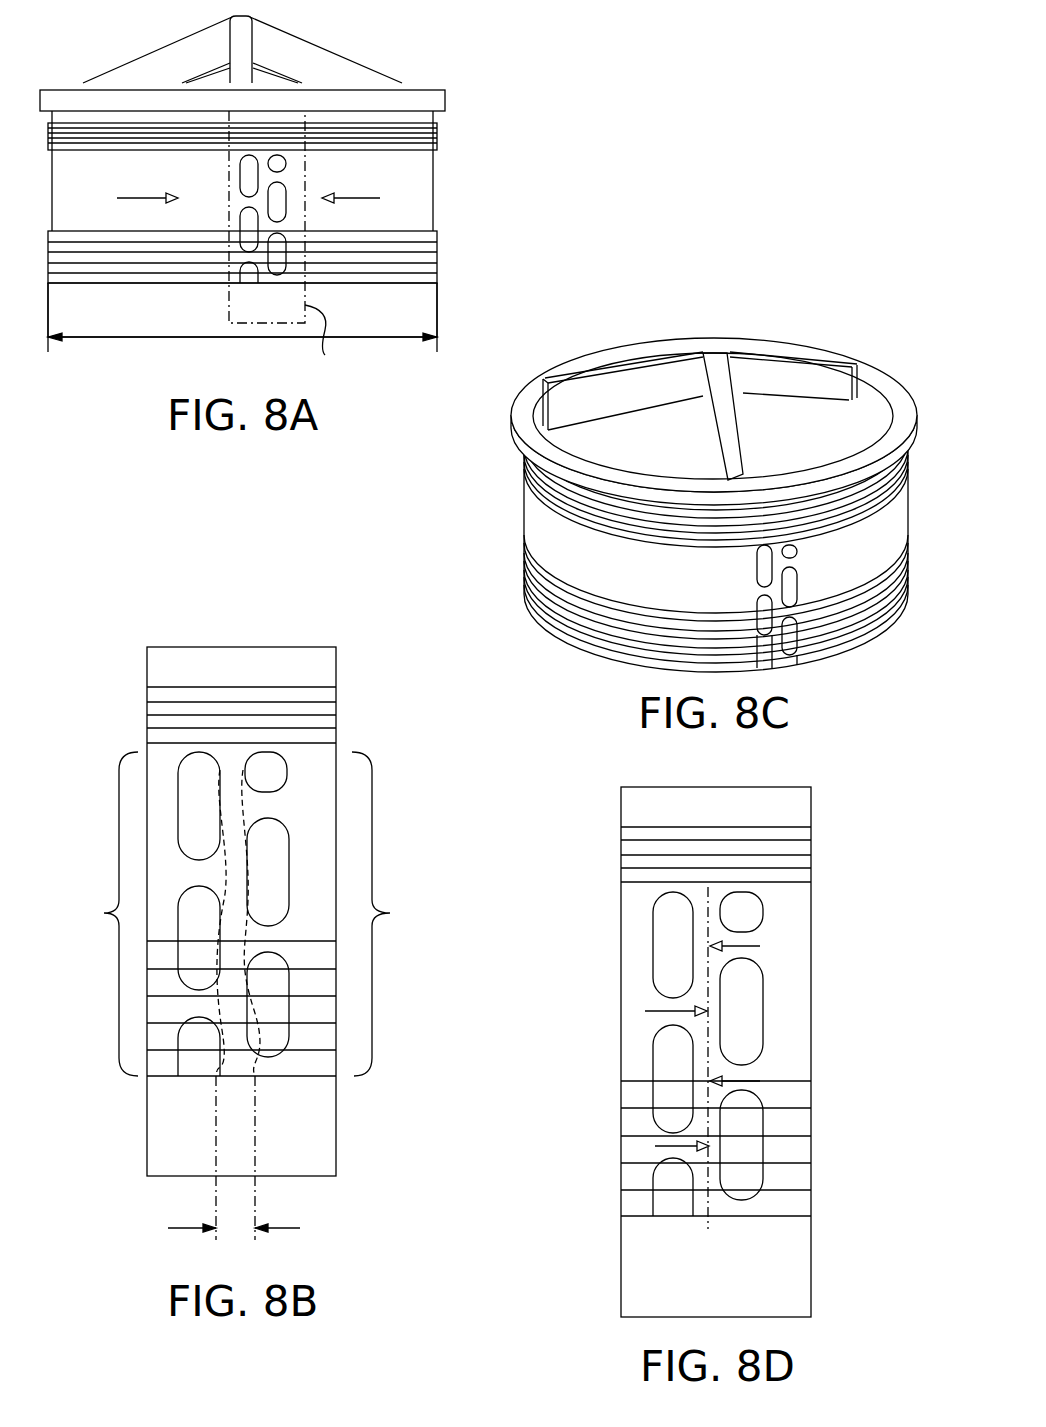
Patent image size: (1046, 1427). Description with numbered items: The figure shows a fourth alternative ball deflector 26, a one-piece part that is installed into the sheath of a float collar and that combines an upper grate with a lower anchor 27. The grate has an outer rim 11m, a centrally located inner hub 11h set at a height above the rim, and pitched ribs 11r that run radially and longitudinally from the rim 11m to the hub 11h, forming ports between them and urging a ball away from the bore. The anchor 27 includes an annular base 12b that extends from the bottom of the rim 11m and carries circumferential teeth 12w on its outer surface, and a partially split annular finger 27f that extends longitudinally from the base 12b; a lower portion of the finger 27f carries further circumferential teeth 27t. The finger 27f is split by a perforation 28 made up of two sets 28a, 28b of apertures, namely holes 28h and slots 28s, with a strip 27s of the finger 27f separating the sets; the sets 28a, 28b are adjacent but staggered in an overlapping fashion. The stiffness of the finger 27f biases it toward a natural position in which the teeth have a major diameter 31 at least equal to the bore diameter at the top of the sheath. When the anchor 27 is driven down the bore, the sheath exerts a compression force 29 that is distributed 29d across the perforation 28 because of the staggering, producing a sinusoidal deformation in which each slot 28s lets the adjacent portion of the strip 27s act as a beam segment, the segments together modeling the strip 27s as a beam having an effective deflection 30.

In FIG. 8A, the fourth alternative ball deflector 26 is at (75, 58).
In FIG. 8C, the fourth alternative ball deflector 26 is at (568, 330).
In FIG. 8A, the inner hub 11h is at (240, 17).
In FIG. 8C, the inner hub 11h is at (713, 350).
In FIG. 8A, the ribs 11r is at (345, 57).
In FIG. 8C, the ribs 11r is at (735, 418).
In FIG. 8A, the outer rim 11m is at (445, 97).
In FIG. 8C, the outer rim 11m is at (893, 388).
In FIG. 8A, the annular base 12b is at (48, 124).
In FIG. 8B, the annular base 12b is at (249, 681).
In FIG. 8D, the annular base 12b is at (724, 821).
In FIG. 8A, the circumferential teeth 12w is at (437, 133).
In FIG. 8B, the circumferential teeth 12w is at (325, 708).
In FIG. 8C, the anchor 27 is at (523, 587).
In FIG. 8A, the finger 27f is at (420, 197).
In FIG. 8D, the finger 27f is at (630, 997).
In FIG. 8A, the circumferential teeth 27t is at (437, 252).
In FIG. 8D, the circumferential teeth 27t is at (628, 1148).
In FIG. 8B, the strip 27s is at (233, 770).
In FIG. 8A, the perforation 28 is at (250, 281).
In FIG. 8C, the perforation 28 is at (790, 658).
In FIG. 8B, the perforation 28 is at (100, 642).
In FIG. 8D, the perforation 28 is at (578, 790).
In FIG. 8B, the first set of apertures 28a is at (95, 914).
In FIG. 8B, the second set of apertures 28b is at (392, 914).
In FIG. 8D, the holes 28h is at (742, 913).
In FIG. 8D, the slots 28s is at (665, 946).
In FIG. 8A, the compression force 29 is at (365, 200).
In FIG. 8D, the distributed compression force 29d is at (657, 1012).
In FIG. 8B, the effective deflection 30 is at (298, 1226).
In FIG. 8A, the major diameter 31 is at (135, 338).